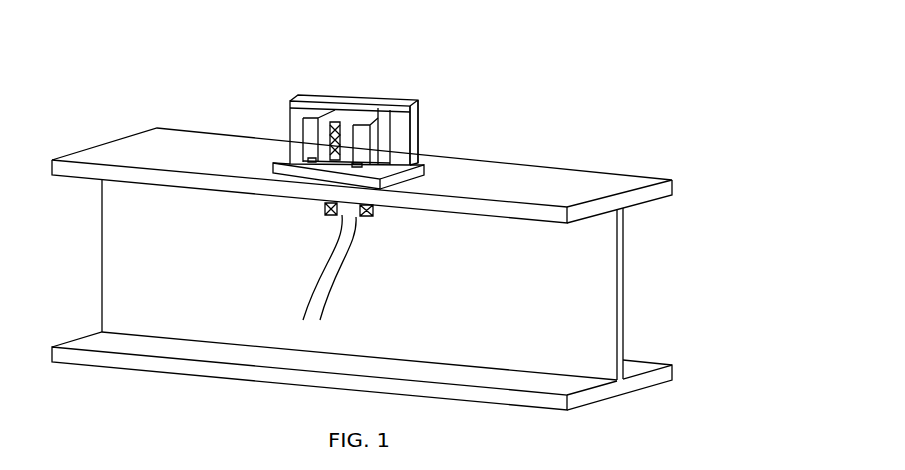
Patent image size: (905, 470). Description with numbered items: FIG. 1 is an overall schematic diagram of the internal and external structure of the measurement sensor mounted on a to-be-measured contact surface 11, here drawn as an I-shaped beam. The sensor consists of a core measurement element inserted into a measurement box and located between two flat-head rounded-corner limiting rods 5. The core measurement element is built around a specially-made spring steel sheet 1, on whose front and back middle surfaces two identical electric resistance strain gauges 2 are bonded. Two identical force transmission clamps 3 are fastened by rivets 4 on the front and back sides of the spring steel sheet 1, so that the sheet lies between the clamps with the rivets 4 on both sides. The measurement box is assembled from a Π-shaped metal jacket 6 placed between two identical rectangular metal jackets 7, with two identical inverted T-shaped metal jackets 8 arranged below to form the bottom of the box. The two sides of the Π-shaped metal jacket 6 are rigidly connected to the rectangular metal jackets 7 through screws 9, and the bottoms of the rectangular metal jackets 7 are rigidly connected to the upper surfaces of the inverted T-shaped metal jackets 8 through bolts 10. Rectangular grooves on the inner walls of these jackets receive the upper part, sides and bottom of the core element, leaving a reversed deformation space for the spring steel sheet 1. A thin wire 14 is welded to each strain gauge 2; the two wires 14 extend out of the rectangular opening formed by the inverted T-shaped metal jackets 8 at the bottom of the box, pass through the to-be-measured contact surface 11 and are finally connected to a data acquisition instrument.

The spring steel sheet 1 is at (332, 120).
The strain gauge 2 is at (343, 130).
The force transmission clamp 3 is at (355, 127).
The rivet 4 is at (357, 172).
The flat-head rounded-corner limiting rod 5 is at (313, 117).
The Π-shaped metal jacket 6 is at (398, 113).
The rectangular metal jacket 7 is at (415, 125).
The inverted T-shaped metal jacket 8 is at (322, 172).
The screw 9 is at (415, 145).
The bolt 10 is at (312, 157).
The to-be-measured contact surface 11 is at (497, 183).
The wire 14 is at (314, 279).